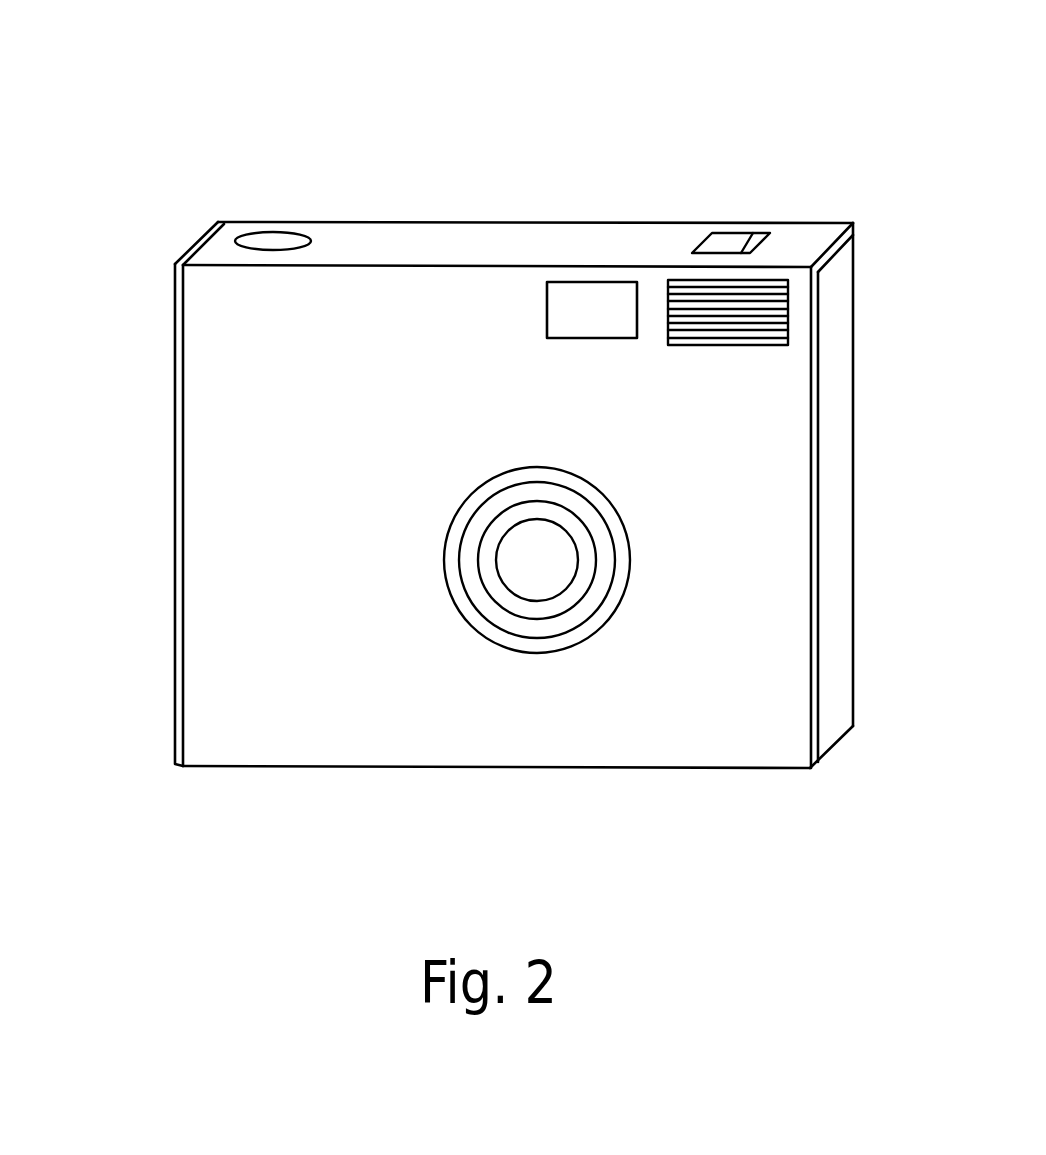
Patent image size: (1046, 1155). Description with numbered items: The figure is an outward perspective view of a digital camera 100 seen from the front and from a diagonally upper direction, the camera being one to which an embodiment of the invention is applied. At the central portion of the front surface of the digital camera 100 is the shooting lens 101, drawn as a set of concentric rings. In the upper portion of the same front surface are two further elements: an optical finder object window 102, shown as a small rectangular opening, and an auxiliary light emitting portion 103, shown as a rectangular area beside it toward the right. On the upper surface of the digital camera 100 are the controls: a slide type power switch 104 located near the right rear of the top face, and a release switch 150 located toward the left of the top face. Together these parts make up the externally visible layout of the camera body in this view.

The digital camera 100 is at (145, 149).
The shooting lens 101 is at (537, 560).
The optical finder object window 102 is at (582, 305).
The auxiliary light emitting portion 103 is at (693, 297).
The slide type power switch 104 is at (720, 242).
The release switch 150 is at (268, 243).